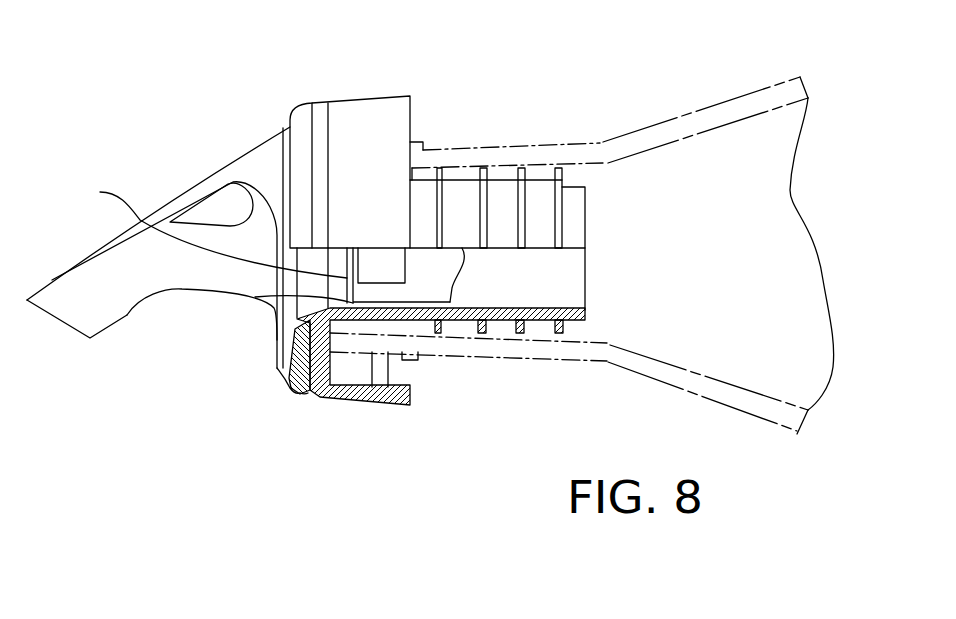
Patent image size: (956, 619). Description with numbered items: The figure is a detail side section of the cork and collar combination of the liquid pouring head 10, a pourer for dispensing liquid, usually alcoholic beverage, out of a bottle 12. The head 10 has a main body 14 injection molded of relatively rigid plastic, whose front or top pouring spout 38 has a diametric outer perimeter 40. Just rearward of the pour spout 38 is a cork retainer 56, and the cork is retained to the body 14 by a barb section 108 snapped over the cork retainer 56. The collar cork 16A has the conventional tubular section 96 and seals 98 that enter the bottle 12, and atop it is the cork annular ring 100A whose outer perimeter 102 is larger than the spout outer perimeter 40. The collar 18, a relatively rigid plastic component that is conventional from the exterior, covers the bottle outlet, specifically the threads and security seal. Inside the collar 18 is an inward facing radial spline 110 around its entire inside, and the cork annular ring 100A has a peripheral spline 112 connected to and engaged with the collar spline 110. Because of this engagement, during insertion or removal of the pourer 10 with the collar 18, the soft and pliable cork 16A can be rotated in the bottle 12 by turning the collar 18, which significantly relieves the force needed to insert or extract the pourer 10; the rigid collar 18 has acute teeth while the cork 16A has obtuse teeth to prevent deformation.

The liquid pouring head 10 is at (290, 400).
The bottle 12 is at (728, 405).
The main body 14 is at (197, 124).
The collar cork 16A is at (538, 180).
The collar 18 is at (344, 97).
The pouring spout 38 is at (127, 315).
The spout outer perimeter 40 is at (288, 377).
The cork retainer 56 is at (211, 228).
The tubular section 96 is at (575, 183).
The seals 98 is at (450, 177).
The cork annular ring 100A is at (297, 321).
The cork outer perimeter 102 is at (318, 400).
The barb section 108 is at (255, 297).
The collar spline 110 is at (330, 387).
The peripheral spline 112 is at (305, 393).